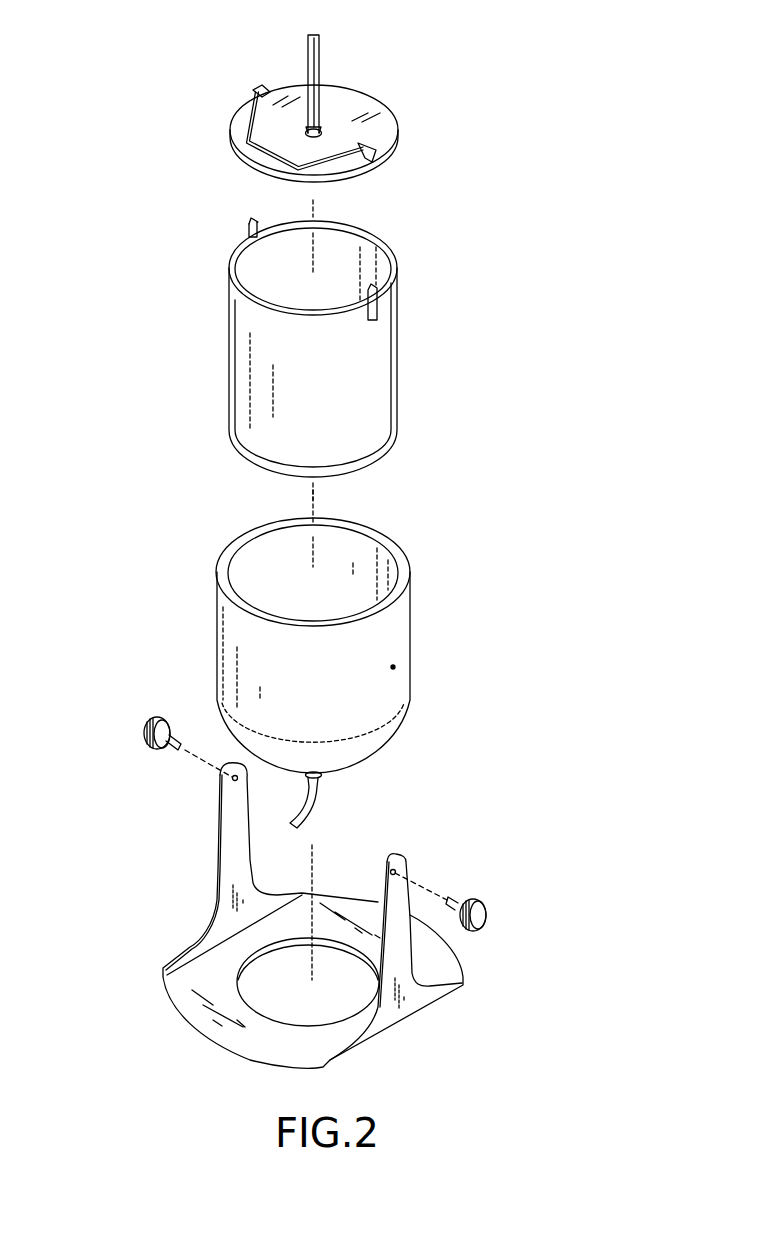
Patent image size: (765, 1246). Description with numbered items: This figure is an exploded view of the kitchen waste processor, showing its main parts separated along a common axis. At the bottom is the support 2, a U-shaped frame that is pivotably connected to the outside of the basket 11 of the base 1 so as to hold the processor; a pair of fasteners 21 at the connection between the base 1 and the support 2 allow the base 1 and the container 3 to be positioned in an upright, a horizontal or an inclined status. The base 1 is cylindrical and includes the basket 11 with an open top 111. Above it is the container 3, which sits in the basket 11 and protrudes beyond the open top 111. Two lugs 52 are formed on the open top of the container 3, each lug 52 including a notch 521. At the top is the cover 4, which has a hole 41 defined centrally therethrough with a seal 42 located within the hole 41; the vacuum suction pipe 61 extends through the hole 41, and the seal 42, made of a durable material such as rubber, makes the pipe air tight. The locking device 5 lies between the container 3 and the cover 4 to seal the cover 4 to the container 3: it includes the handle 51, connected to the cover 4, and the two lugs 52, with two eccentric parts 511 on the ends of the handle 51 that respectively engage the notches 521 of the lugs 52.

The base 1 is at (304, 659).
The basket 11 is at (217, 647).
The open top 111 is at (273, 570).
The support 2 is at (457, 1019).
The fasteners 21 is at (128, 722).
The container 3 is at (313, 334).
The cover 4 is at (426, 110).
The hole 41 is at (366, 90).
The seal 42 is at (328, 144).
The locking device 5 is at (284, 140).
The handle 51 is at (327, 163).
The eccentric parts 511 is at (250, 88).
The lugs 52 is at (288, 244).
The notch 521 is at (253, 222).
The vacuum suction pipe 61 is at (303, 78).